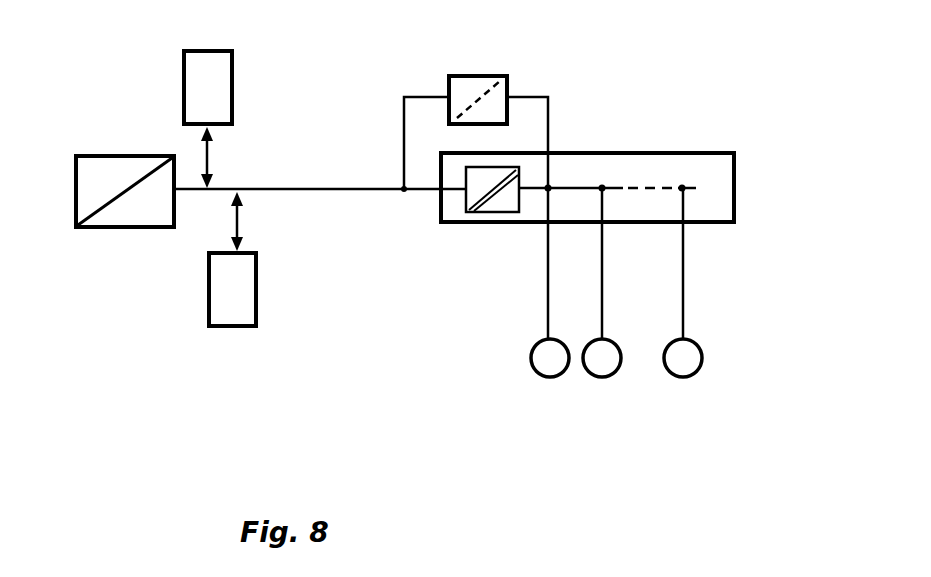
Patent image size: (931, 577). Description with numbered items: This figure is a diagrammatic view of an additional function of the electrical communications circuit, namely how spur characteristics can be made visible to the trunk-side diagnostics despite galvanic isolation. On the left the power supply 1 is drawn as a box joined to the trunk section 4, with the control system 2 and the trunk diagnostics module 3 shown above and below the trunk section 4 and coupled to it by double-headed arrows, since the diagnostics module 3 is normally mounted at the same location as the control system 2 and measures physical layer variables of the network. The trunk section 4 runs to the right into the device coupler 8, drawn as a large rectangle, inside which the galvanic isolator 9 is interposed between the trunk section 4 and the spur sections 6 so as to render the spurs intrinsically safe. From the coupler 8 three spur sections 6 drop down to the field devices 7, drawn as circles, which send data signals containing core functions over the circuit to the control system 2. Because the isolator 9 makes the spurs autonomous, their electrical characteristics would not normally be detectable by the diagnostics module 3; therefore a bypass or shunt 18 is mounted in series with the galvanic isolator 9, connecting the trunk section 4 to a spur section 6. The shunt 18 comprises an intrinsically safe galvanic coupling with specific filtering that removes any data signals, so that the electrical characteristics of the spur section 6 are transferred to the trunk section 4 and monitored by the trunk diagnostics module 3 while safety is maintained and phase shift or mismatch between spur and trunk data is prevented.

The power supply 1 is at (140, 207).
The control system 2 is at (232, 72).
The trunk diagnostics module 3 is at (227, 303).
The trunk section 4 is at (360, 197).
The spur section 6 is at (548, 255).
The field device 7 is at (547, 363).
The device coupler 8 is at (715, 202).
The galvanic isolator 9 is at (489, 208).
The shunt 18 is at (480, 78).